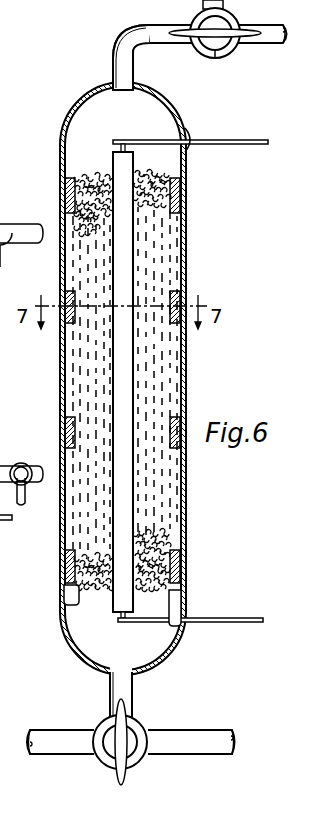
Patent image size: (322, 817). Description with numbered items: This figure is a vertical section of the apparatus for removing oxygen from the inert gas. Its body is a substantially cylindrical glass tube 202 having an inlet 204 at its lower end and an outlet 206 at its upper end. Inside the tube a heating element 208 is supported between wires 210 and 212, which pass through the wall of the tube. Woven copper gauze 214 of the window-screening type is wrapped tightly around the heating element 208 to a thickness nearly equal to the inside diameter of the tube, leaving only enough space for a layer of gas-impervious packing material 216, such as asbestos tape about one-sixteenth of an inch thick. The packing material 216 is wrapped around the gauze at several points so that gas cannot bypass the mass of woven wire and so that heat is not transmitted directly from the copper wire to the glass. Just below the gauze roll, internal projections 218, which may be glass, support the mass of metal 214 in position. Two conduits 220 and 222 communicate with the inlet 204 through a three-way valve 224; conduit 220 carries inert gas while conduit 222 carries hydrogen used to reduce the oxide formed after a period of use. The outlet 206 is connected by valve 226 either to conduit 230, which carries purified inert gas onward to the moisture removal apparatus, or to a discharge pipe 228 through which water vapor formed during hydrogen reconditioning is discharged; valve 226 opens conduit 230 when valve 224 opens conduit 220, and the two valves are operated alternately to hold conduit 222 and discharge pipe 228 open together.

The glass tube 202 is at (187, 230).
The inlet 204 is at (110, 699).
The outlet 206 is at (113, 59).
The heating element 208 is at (118, 163).
The wire 210 is at (270, 120).
The wire 212 is at (232, 620).
The woven copper gauze 214 is at (160, 176).
The packing material 216 is at (182, 193).
The internal projections 218 is at (62, 610).
The conduit 220 is at (85, 746).
The conduit 222 is at (183, 758).
The three-way valve 224 is at (132, 738).
The valve 226 is at (213, 52).
The discharge pipe 228 is at (201, 8).
The conduit 230 is at (253, 26).